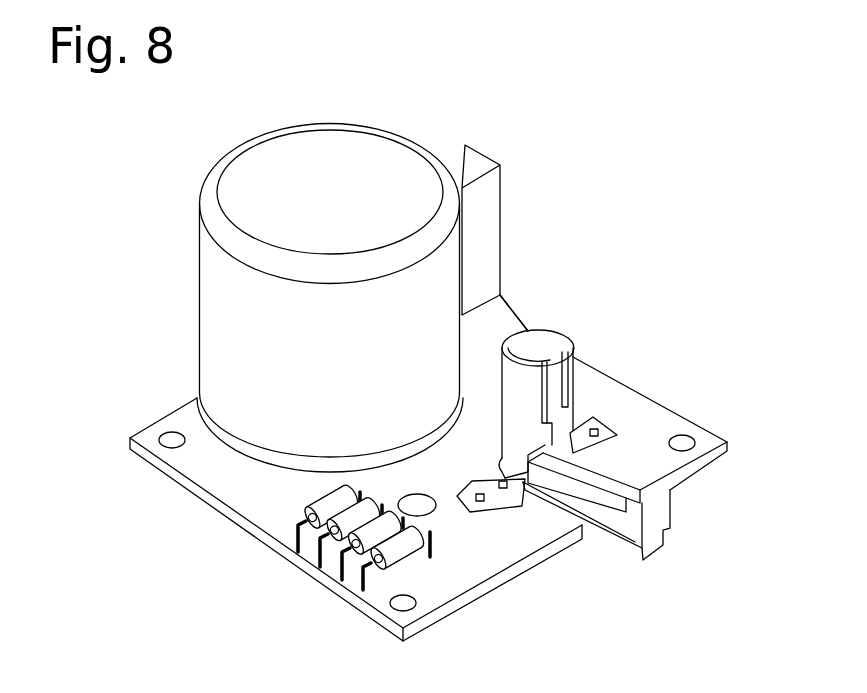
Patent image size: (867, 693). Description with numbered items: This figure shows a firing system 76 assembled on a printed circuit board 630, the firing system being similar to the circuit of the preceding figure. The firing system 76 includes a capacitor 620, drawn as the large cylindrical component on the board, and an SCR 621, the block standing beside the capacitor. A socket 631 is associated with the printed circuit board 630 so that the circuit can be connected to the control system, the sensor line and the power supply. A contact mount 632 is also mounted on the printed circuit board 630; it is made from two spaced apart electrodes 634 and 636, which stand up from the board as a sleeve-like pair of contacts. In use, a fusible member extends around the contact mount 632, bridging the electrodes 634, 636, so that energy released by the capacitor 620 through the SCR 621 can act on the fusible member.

The firing system 76 is at (102, 212).
The capacitor 620 is at (347, 364).
The SCR 621 is at (483, 208).
The printed circuit board 630 is at (245, 502).
The socket 631 is at (663, 523).
The contact mount 632 is at (559, 297).
The electrode 634 is at (518, 390).
The electrode 636 is at (557, 343).